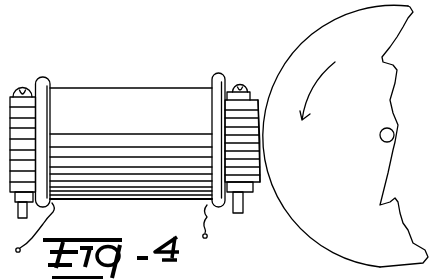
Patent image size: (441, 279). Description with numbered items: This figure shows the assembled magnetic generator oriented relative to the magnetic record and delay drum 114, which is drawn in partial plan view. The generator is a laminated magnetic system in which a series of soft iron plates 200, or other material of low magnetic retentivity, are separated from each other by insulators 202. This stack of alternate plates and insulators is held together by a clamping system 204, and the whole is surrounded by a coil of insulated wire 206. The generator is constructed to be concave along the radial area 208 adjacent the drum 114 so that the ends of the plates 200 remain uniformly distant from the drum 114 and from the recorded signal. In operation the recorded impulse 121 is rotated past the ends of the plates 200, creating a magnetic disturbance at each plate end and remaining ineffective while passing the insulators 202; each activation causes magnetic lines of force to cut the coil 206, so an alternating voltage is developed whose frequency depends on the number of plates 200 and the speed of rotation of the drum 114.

The soft iron plates 200 is at (32, 116).
The insulators 202 is at (28, 108).
The clamping system 204 is at (31, 75).
The coil of insulated wire 206 is at (124, 93).
The radial area 208 is at (263, 159).
The magnetic record and delay drum 114 is at (397, 63).
The recorded impulse 121 is at (300, 44).